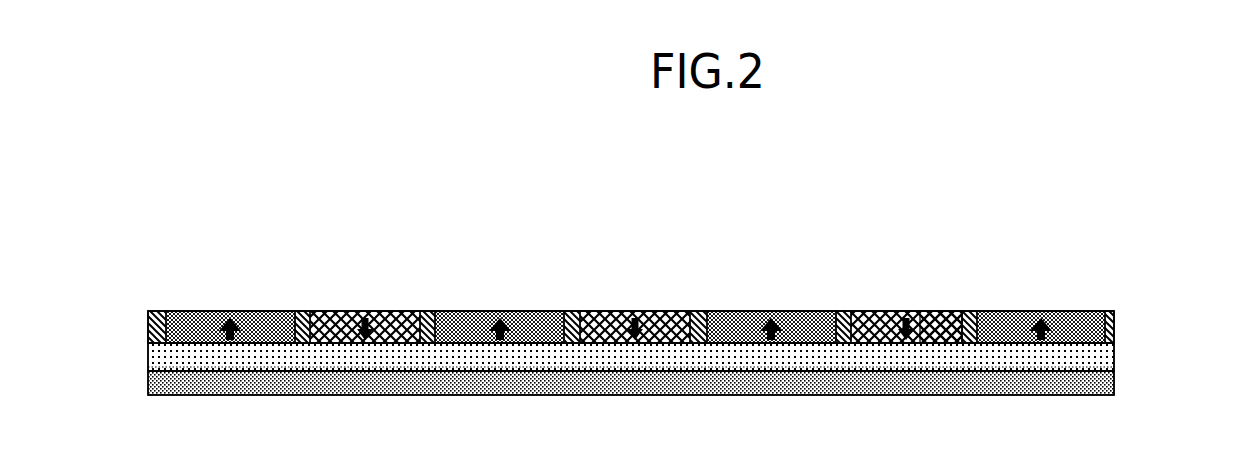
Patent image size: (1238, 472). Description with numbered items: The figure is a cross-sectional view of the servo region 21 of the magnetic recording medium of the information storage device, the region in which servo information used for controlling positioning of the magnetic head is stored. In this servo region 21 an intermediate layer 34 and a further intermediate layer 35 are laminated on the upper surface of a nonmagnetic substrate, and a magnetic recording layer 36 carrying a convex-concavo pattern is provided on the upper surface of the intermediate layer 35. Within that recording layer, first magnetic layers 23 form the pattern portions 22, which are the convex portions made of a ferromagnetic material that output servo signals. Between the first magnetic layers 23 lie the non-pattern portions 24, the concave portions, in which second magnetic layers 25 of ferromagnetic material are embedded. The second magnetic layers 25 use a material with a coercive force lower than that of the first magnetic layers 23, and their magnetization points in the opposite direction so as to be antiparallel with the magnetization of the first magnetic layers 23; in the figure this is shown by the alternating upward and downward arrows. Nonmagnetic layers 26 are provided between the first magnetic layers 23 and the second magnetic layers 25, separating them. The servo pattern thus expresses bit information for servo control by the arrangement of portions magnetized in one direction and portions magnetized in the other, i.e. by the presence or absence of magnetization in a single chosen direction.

The servo region 21 is at (187, 210).
The pattern portion 22 is at (1074, 318).
The first magnetic layer 23 is at (208, 311).
The non-pattern portion 24 is at (932, 318).
The second magnetic layer 25 is at (352, 311).
The nonmagnetic layer 26 is at (302, 311).
The intermediate layer 34 is at (1108, 380).
The intermediate layer 35 is at (1108, 355).
The magnetic recording layer 36 is at (1115, 322).